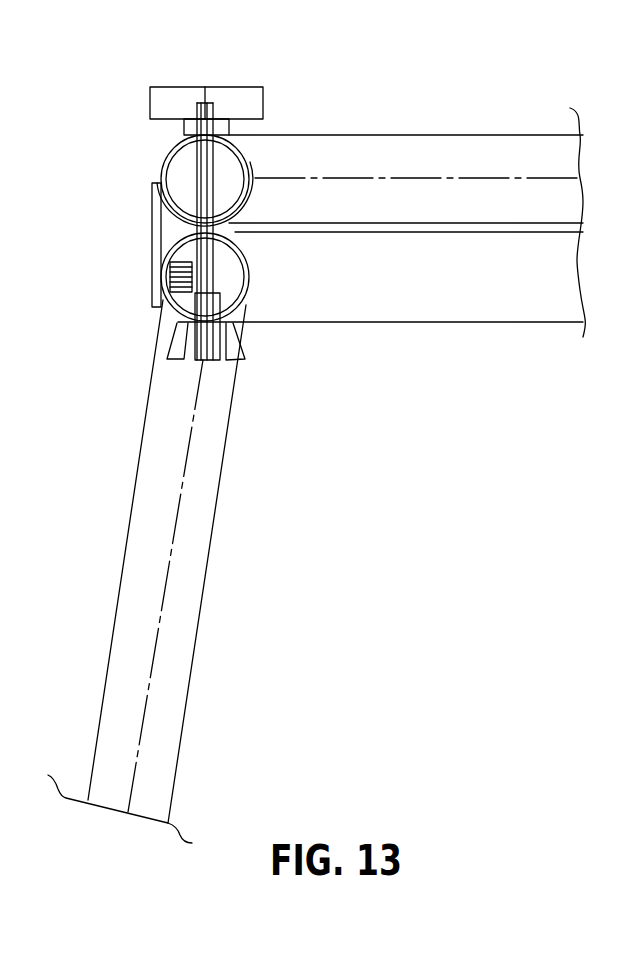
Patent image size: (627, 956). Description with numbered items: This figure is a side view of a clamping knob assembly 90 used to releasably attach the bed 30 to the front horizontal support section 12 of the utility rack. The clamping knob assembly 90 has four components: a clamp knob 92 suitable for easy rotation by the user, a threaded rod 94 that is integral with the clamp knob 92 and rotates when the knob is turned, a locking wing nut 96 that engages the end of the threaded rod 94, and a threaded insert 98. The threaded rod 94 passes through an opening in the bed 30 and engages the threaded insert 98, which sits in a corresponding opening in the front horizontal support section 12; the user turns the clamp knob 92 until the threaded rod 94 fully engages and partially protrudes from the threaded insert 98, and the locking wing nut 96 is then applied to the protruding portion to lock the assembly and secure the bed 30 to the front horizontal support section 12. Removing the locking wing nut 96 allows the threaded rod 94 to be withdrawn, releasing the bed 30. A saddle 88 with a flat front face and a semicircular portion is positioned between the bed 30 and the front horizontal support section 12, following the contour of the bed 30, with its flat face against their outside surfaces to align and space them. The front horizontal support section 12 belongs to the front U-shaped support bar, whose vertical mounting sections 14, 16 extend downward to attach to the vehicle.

The clamping knob assembly 90 is at (78, 117).
The clamp knob 92 is at (170, 98).
The threaded rod 94 is at (205, 170).
The bed 30 is at (428, 150).
The front horizontal support section 12 is at (248, 273).
The saddle 88 is at (155, 202).
The threaded insert 98 is at (167, 292).
The locking wing nut 96 is at (177, 345).
The vertical mounting section 14 is at (180, 571).
The vertical mounting section 16 is at (183, 607).